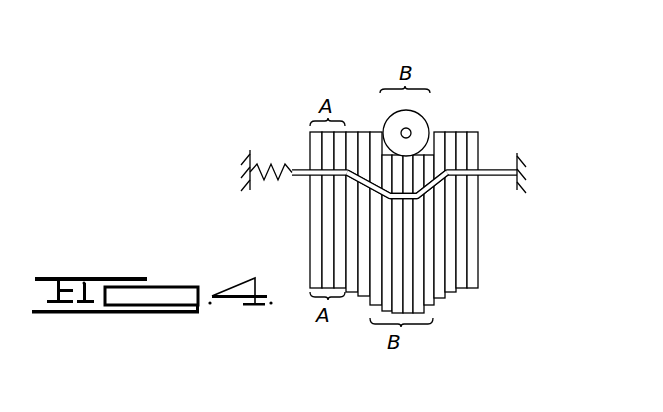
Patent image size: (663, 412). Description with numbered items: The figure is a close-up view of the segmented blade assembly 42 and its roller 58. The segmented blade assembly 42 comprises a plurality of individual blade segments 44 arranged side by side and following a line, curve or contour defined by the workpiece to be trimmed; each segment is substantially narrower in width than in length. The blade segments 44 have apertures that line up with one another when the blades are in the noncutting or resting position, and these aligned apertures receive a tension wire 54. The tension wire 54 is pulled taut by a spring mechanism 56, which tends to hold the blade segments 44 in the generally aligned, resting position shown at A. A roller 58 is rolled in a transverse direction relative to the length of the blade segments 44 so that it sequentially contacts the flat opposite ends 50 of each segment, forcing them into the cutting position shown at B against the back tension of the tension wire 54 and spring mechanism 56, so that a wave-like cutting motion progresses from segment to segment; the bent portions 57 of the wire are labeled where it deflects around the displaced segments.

The segmented blade assembly 42 is at (483, 145).
The blade segments 44 is at (337, 257).
The opposite end 50 is at (460, 132).
The tension wire 54 is at (511, 170).
The spring mechanism 56 is at (258, 165).
The bent portion of rod 57 is at (320, 178).
The roller 58 is at (425, 117).